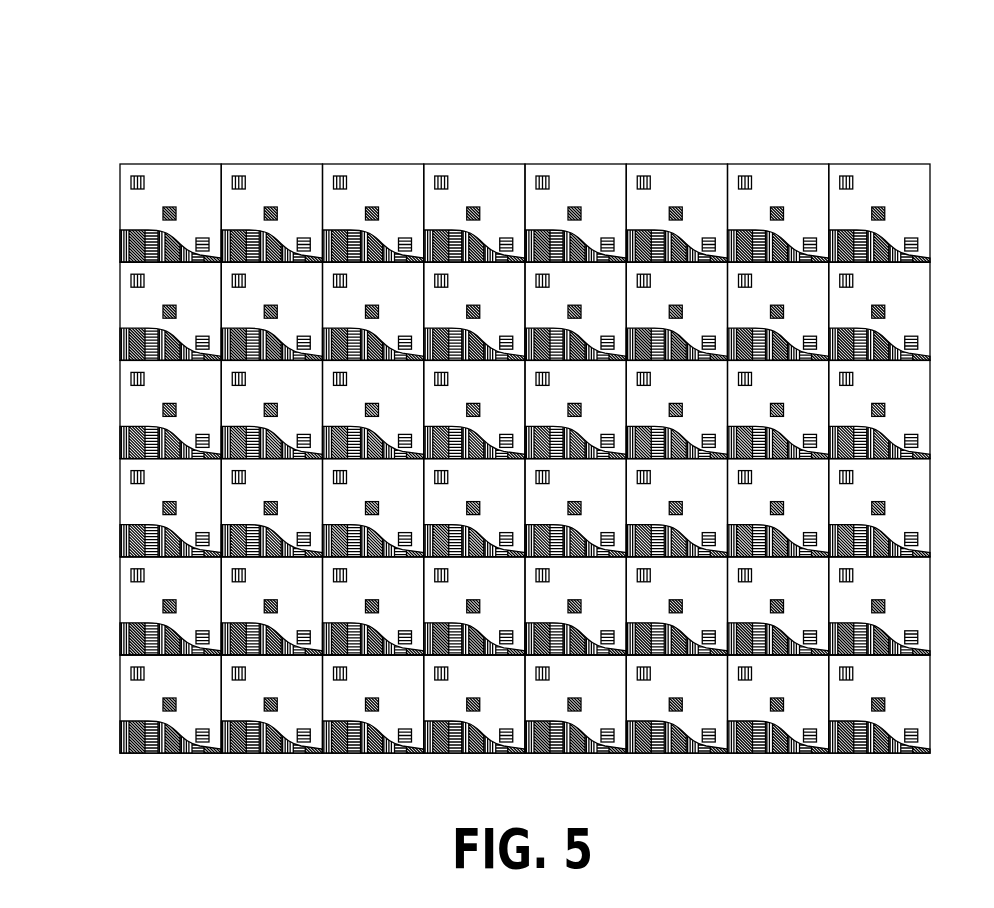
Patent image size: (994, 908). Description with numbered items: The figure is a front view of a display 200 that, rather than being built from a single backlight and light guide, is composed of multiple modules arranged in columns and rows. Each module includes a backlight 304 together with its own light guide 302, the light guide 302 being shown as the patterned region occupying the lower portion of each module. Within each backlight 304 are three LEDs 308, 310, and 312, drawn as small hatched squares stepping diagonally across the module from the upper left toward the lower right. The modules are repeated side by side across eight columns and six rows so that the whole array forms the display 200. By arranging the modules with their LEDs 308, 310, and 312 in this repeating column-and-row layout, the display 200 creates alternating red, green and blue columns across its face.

The display 200 is at (482, 50).
The light guide 302 is at (126, 237).
The backlight 304 is at (117, 193).
The LED 308 is at (138, 172).
The LED 310 is at (167, 203).
The LED 312 is at (203, 231).